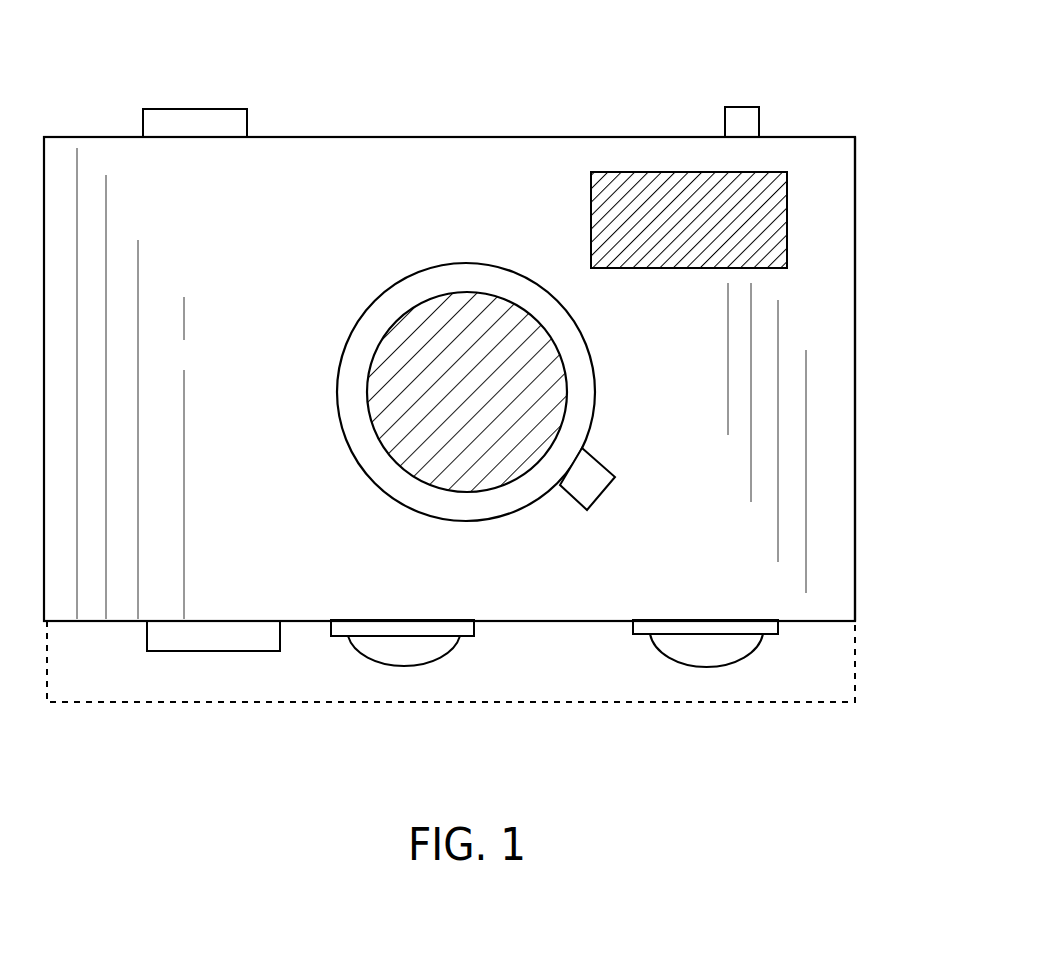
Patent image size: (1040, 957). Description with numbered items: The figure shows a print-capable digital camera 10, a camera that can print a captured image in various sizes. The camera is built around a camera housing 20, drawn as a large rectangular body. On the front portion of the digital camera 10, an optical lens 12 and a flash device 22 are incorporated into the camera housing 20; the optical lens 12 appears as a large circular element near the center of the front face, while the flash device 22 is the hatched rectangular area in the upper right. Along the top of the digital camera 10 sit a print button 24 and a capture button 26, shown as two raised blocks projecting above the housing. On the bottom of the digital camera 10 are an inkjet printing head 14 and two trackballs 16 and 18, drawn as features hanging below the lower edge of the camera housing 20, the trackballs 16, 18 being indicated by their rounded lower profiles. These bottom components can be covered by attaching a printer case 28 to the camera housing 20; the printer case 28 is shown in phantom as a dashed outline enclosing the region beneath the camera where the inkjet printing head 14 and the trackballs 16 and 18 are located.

The print-capable digital camera 10 is at (930, 115).
The optical lens 12 is at (505, 397).
The inkjet printing head 14 is at (185, 651).
The trackball 16 is at (445, 657).
The trackball 18 is at (660, 653).
The camera housing 20 is at (855, 393).
The flash device 22 is at (591, 222).
The print button 24 is at (215, 109).
The capture button 26 is at (745, 107).
The printer case 28 is at (855, 652).